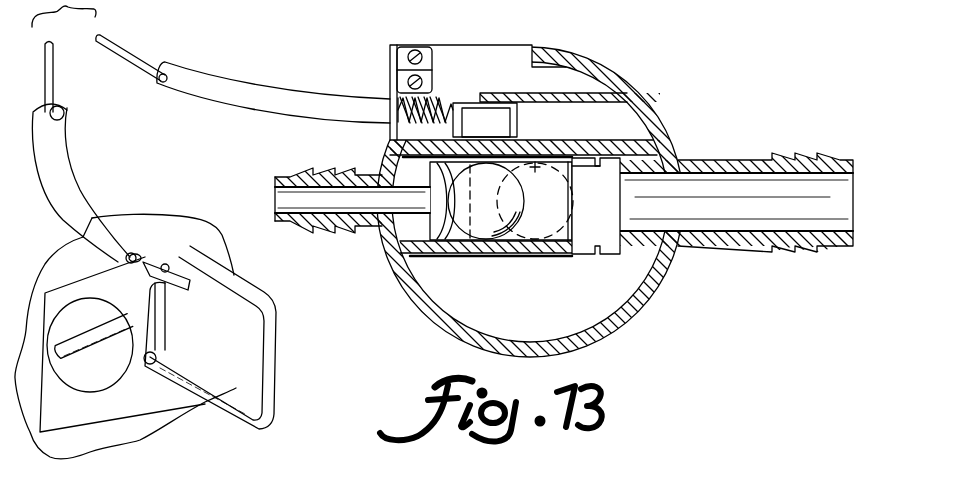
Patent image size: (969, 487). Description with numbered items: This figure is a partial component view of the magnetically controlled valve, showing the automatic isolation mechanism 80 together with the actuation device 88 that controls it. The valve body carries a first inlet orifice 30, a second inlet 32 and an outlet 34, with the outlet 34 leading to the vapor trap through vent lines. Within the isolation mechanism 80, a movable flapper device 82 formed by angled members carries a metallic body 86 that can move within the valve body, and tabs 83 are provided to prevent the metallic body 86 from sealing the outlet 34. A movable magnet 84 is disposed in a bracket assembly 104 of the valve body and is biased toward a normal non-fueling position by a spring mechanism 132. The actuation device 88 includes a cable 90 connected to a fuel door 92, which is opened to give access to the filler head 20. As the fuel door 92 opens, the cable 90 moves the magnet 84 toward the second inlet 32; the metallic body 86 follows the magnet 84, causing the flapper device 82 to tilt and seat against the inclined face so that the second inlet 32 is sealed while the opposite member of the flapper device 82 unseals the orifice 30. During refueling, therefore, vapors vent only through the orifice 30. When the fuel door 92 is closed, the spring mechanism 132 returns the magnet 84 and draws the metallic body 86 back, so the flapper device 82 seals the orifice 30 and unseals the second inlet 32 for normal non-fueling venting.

The filler head device 20 is at (99, 364).
The first inlet orifice 30 is at (533, 160).
The second inlet 32 is at (275, 200).
The outlet 34 is at (856, 195).
The automatic isolation mechanism 80 is at (627, 55).
The flapper device 82 is at (557, 238).
The tabs 83 is at (603, 192).
The movable magnet 84 is at (480, 112).
The metallic body 86 is at (480, 228).
The actuation device 88 is at (103, 196).
The cable 90 is at (236, 106).
The fuel door 92 is at (240, 324).
The bracket assembly 104 is at (449, 62).
The spring mechanism 132 is at (407, 100).